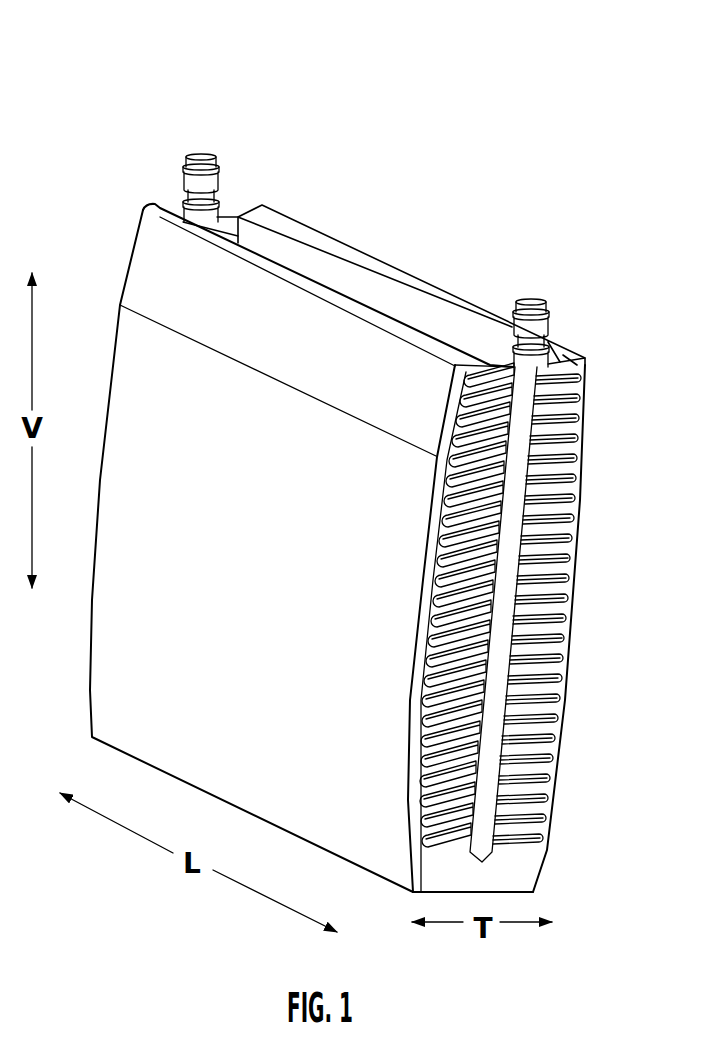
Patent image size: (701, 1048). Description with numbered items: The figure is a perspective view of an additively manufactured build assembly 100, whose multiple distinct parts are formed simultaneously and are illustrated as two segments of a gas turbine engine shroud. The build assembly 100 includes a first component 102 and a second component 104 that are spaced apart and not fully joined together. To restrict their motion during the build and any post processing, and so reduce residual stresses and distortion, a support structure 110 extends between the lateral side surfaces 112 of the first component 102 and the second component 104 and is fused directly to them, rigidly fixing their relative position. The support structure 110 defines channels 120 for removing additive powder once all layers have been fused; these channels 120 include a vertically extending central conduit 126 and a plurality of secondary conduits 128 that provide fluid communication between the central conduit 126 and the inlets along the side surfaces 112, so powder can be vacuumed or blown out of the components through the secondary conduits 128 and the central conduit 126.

The build assembly 100 is at (135, 107).
The first component 102 is at (128, 543).
The second component 104 is at (388, 272).
The support structure 110 is at (443, 882).
The lateral side surface 112 is at (428, 635).
The channel 120 is at (531, 295).
The central conduit 126 is at (515, 532).
The secondary conduit 128 is at (475, 450).